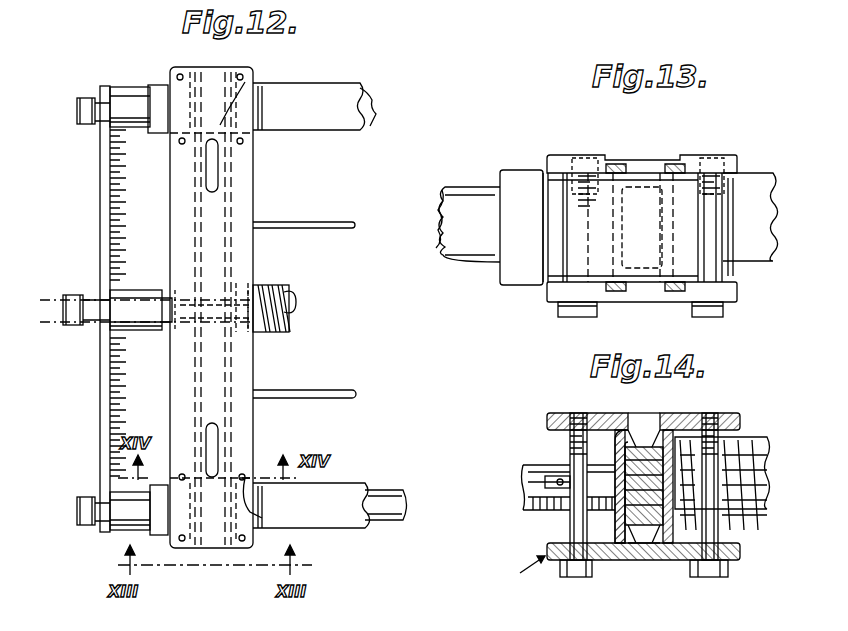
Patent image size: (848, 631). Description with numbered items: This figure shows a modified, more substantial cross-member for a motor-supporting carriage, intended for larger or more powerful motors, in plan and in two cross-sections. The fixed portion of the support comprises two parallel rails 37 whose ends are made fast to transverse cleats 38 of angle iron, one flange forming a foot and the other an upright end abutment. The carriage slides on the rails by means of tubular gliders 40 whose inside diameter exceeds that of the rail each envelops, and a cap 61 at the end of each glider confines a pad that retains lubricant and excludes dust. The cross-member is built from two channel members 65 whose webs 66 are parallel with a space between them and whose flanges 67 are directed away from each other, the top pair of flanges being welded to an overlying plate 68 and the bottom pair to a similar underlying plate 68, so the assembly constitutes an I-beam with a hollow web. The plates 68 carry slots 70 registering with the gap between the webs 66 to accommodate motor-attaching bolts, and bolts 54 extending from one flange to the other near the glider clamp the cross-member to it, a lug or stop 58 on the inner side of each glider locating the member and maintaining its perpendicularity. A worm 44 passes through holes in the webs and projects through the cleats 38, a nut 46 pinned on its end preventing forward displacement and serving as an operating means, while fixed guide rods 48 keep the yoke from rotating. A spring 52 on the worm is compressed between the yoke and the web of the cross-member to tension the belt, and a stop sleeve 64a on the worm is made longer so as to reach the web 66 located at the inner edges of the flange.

In FIG. 12, the rails 37 is at (125, 100).
In FIG. 12, the transverse cleats 38 is at (100, 190).
In FIG. 12, the gliders 40 is at (336, 90).
In FIG. 13, the gliders 40 is at (737, 176).
In FIG. 12, the worm 44 is at (292, 305).
In FIG. 14, the worm 44 is at (527, 470).
In FIG. 12, the nut 46 is at (70, 292).
In FIG. 12, the fixed guide rods 48 is at (335, 220).
In FIG. 14, the fixed guide rods 48 is at (530, 504).
In FIG. 12, the spring 52 is at (282, 330).
In FIG. 14, the spring 52 is at (740, 442).
In FIG. 12, the bolts 54 is at (180, 145).
In FIG. 13, the bolts 54 is at (585, 304).
In FIG. 14, the bolts 54 is at (580, 578).
In FIG. 12, the lug or stop 58 is at (248, 86).
In FIG. 13, the lug or stop 58 is at (655, 290).
In FIG. 14, the lug or stop 58 is at (645, 448).
In FIG. 12, the cap 61 is at (158, 134).
In FIG. 13, the cap 61 is at (525, 170).
In FIG. 12, the stop sleeve 64a is at (145, 290).
In FIG. 13, the channel members 65 is at (700, 160).
In FIG. 14, the channel members 65 is at (516, 577).
In FIG. 12, the webs 66 is at (215, 282).
In FIG. 13, the webs 66 is at (662, 246).
In FIG. 14, the webs 66 is at (628, 548).
In FIG. 13, the flanges 67 is at (600, 170).
In FIG. 14, the flanges 67 is at (565, 430).
In FIG. 12, the plate 68 is at (240, 378).
In FIG. 13, the plate 68 is at (652, 158).
In FIG. 14, the plate 68 is at (556, 418).
In FIG. 12, the slots 70 is at (218, 158).
In FIG. 14, the slots 70 is at (630, 414).